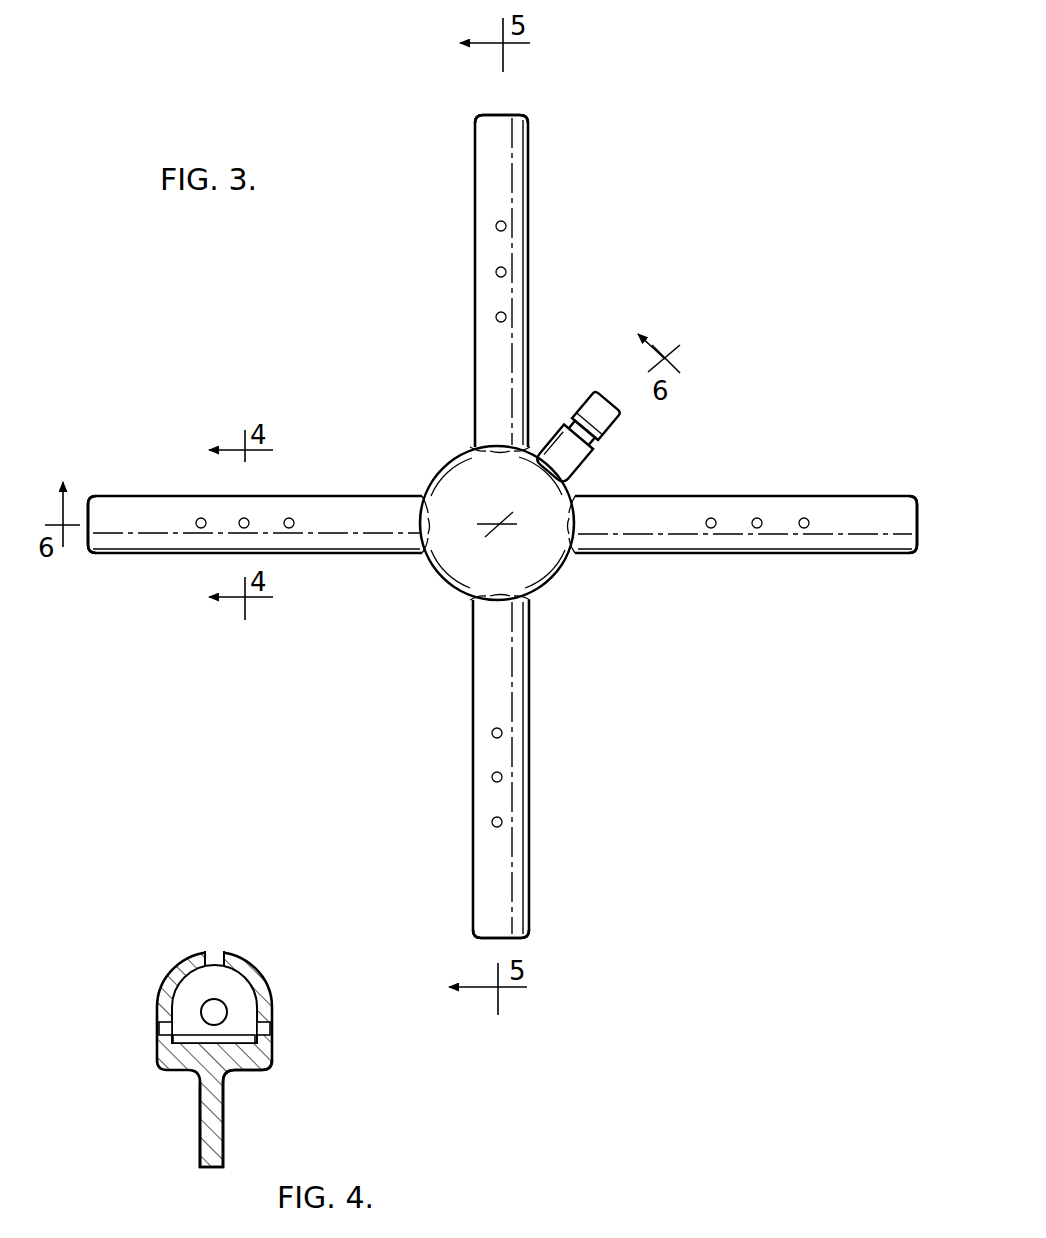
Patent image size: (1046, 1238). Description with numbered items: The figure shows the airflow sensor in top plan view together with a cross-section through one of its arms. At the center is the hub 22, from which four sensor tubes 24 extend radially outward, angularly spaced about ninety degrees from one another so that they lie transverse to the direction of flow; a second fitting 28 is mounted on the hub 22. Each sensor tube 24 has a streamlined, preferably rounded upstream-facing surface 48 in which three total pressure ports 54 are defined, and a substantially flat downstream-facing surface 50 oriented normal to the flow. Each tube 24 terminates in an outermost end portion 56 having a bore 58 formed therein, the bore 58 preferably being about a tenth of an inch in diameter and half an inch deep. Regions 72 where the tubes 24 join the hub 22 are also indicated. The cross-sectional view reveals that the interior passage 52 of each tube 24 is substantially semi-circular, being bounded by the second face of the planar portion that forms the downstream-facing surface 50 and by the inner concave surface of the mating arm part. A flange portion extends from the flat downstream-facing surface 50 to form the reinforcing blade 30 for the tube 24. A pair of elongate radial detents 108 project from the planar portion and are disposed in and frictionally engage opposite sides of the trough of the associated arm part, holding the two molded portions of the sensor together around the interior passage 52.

In FIG. 3, the hub 22 is at (557, 602).
In FIG. 3, the sensor tube 24 is at (472, 330).
In FIG. 3, the second fitting 28 is at (594, 410).
In FIG. 4, the reinforcing blade 30 is at (207, 1133).
In FIG. 4, the upstream-facing surface 48 is at (173, 964).
In FIG. 4, the downstream-facing surface 50 is at (243, 1072).
In FIG. 4, the interior passage 52 is at (245, 1000).
In FIG. 3, the total pressure port 54 is at (494, 227).
In FIG. 4, the total pressure port 54 is at (213, 948).
In FIG. 3, the outermost end portion 56 is at (467, 117).
In FIG. 4, the bore 58 is at (200, 1006).
In FIG. 3, the collar 72 is at (492, 440).
In FIG. 4, the radial detent 108 is at (172, 1020).